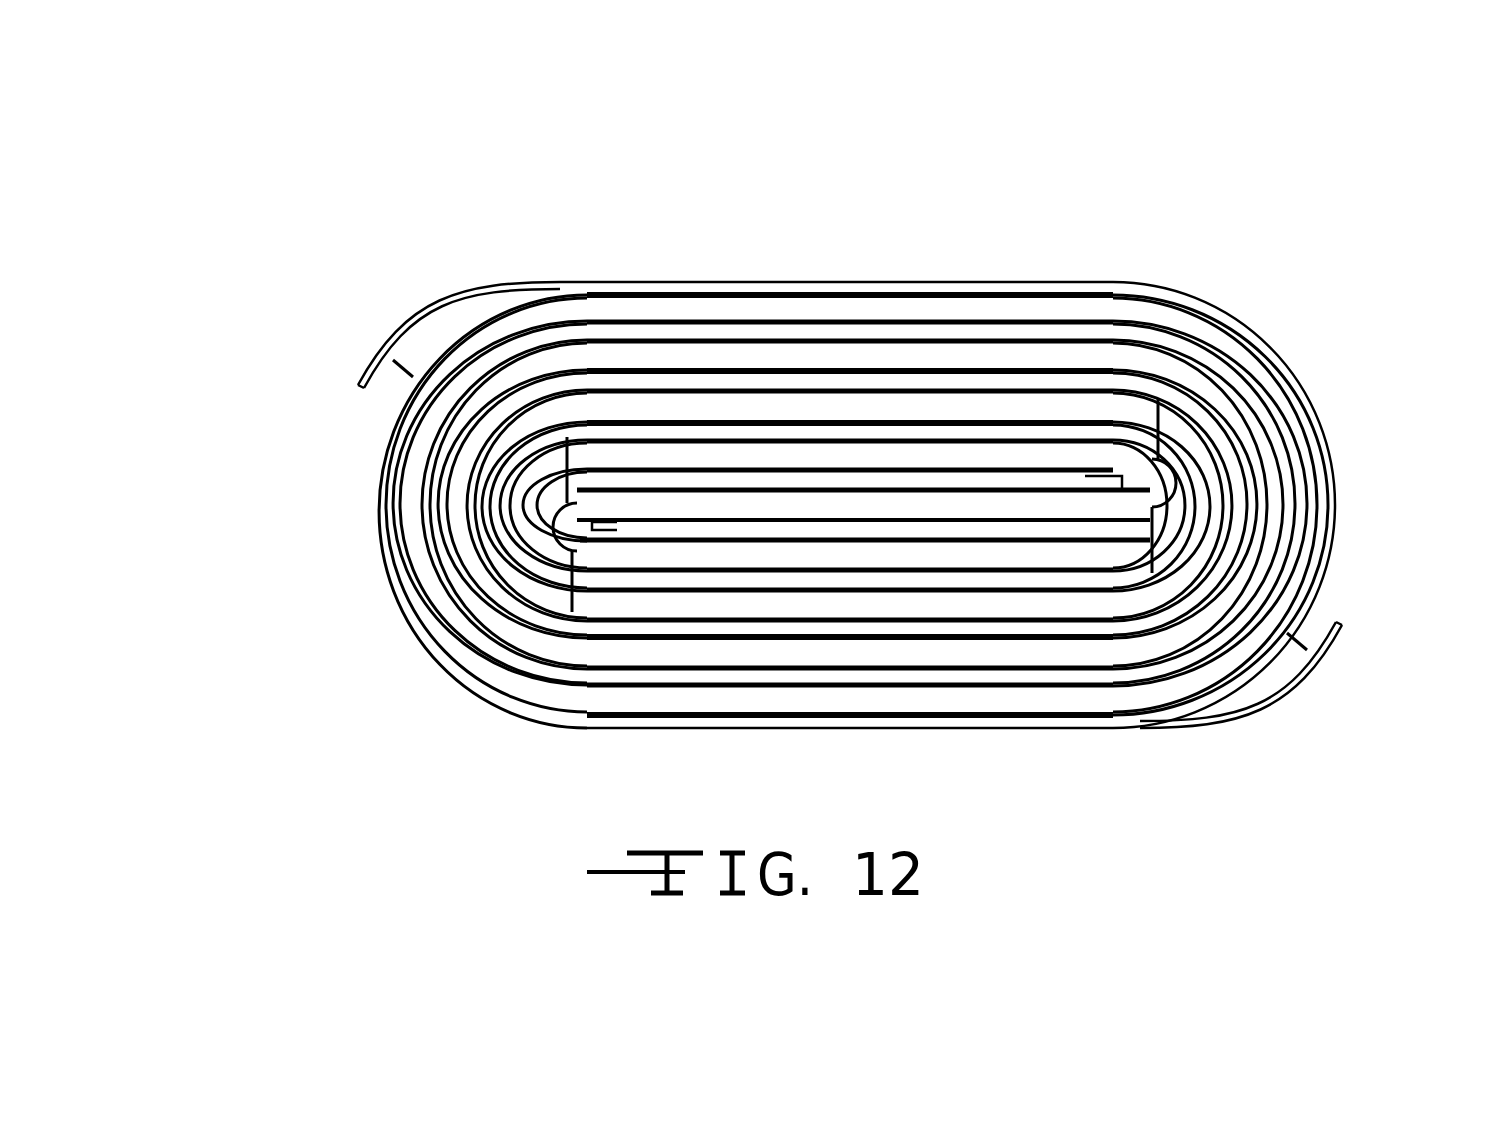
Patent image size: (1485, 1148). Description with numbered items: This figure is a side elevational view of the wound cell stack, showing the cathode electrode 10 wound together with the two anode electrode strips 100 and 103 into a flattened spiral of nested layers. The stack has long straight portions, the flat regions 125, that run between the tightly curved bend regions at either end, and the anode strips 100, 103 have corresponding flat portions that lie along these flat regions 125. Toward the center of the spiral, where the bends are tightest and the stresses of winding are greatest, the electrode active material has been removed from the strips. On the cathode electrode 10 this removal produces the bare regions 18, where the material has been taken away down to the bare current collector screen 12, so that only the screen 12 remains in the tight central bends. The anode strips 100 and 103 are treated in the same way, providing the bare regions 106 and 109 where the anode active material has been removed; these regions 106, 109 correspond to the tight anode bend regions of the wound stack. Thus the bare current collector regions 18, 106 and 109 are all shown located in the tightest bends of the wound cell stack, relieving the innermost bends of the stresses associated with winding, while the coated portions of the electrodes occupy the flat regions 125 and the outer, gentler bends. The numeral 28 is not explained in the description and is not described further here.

The cathode electrode 10 is at (670, 700).
The current collector screen 12 is at (1212, 416).
The bare regions 18 is at (563, 512).
The electrode assembly 28 is at (314, 530).
The anode electrode strip 100 is at (583, 520).
The anode electrode strip 103 is at (618, 262).
The bare region 106 is at (1190, 470).
The bare region 109 is at (525, 535).
The flat regions 125 is at (901, 240).